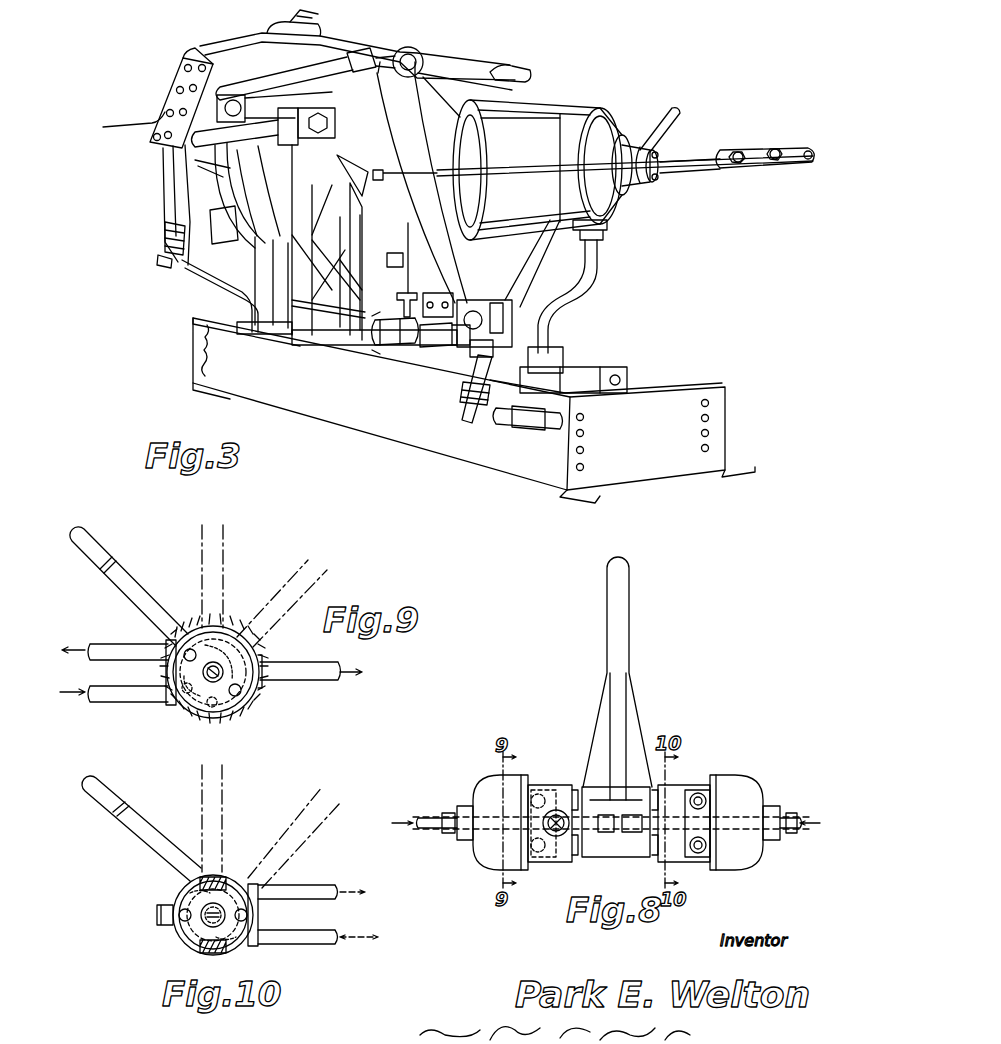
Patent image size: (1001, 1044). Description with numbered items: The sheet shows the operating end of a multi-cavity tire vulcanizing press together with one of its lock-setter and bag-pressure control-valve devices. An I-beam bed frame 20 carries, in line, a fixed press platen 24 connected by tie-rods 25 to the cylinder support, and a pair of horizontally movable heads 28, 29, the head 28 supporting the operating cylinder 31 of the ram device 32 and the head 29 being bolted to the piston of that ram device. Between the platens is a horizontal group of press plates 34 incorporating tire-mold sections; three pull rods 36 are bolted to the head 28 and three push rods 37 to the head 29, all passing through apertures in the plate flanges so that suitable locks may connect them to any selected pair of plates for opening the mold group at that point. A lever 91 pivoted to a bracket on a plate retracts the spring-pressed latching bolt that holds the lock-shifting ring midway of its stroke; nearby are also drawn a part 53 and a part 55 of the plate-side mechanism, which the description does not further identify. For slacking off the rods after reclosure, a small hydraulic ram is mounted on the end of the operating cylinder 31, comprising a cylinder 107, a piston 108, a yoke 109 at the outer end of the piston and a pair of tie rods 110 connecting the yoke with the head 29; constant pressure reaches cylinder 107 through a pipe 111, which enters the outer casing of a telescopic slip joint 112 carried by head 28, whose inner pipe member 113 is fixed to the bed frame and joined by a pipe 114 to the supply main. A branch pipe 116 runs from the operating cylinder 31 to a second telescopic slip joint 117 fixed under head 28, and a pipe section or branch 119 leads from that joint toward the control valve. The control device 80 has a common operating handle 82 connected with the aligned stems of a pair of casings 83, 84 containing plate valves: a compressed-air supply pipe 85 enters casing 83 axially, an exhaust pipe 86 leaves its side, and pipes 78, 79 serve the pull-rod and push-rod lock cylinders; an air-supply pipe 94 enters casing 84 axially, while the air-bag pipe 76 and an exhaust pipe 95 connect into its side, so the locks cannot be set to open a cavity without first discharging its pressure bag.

In FIG. 3, the I-beam bed frame 20 is at (213, 350).
In FIG. 3, the fixed press platen 24 is at (235, 185).
In FIG. 3, the tie-rods 25 is at (224, 106).
In FIG. 3, the head 28 is at (445, 66).
In FIG. 3, the head 29 is at (370, 300).
In FIG. 3, the operating cylinder 31 is at (586, 115).
In FIG. 3, the ram device 32 is at (537, 170).
In FIG. 3, the press plates 34 is at (226, 270).
In FIG. 3, the pull rods 36 is at (331, 62).
In FIG. 3, the push rods 37 is at (530, 73).
In FIG. 3, the bar 53 is at (170, 268).
In FIG. 3, the rack 55 is at (165, 244).
In FIG. 3, the lever 91 is at (184, 60).
In FIG. 3, the cylinder 107 is at (640, 183).
In FIG. 3, the ram or piston 108 is at (688, 152).
In FIG. 3, the yoke 109 is at (760, 148).
In FIG. 3, the tie rods 110 is at (706, 165).
In FIG. 3, the pipe 111 is at (660, 118).
In FIG. 3, the telescopic slip joint 112 is at (395, 345).
In FIG. 3, the inner pipe member 113 is at (440, 348).
In FIG. 3, the pipe 114 is at (467, 424).
In FIG. 3, the branch pipe 116 is at (598, 275).
In FIG. 3, the telescopic slip joint 117 is at (570, 364).
In FIG. 3, the pipe section or branch 119 is at (545, 430).
In FIG. 10, the compressed-air pipe 76 is at (292, 940).
In FIG. 8, the compressed-air pipe 76 is at (698, 853).
In FIG. 9, the pipe 78 is at (108, 694).
In FIG. 9, the pipe 79 is at (108, 648).
In FIG. 9, the control device 80 is at (220, 668).
In FIG. 10, the control device 80 is at (201, 915).
In FIG. 8, the control device 80 is at (555, 812).
In FIG. 9, the common operating handle 82 is at (120, 572).
In FIG. 10, the common operating handle 82 is at (133, 838).
In FIG. 8, the common operating handle 82 is at (612, 600).
In FIG. 9, the valve casing 83 is at (230, 627).
In FIG. 8, the valve casing 83 is at (490, 855).
In FIG. 10, the valve casing 84 is at (175, 888).
In FIG. 8, the valve casing 84 is at (748, 862).
In FIG. 8, the compressed-air supply pipe 85 is at (425, 818).
In FIG. 9, the exhaust pipe 86 is at (310, 673).
In FIG. 8, the exhaust pipe 86 is at (560, 835).
In FIG. 8, the air-supply pipe 94 is at (798, 832).
In FIG. 10, the exhaust pipe 95 is at (313, 876).
In FIG. 8, the exhaust pipe 95 is at (698, 800).